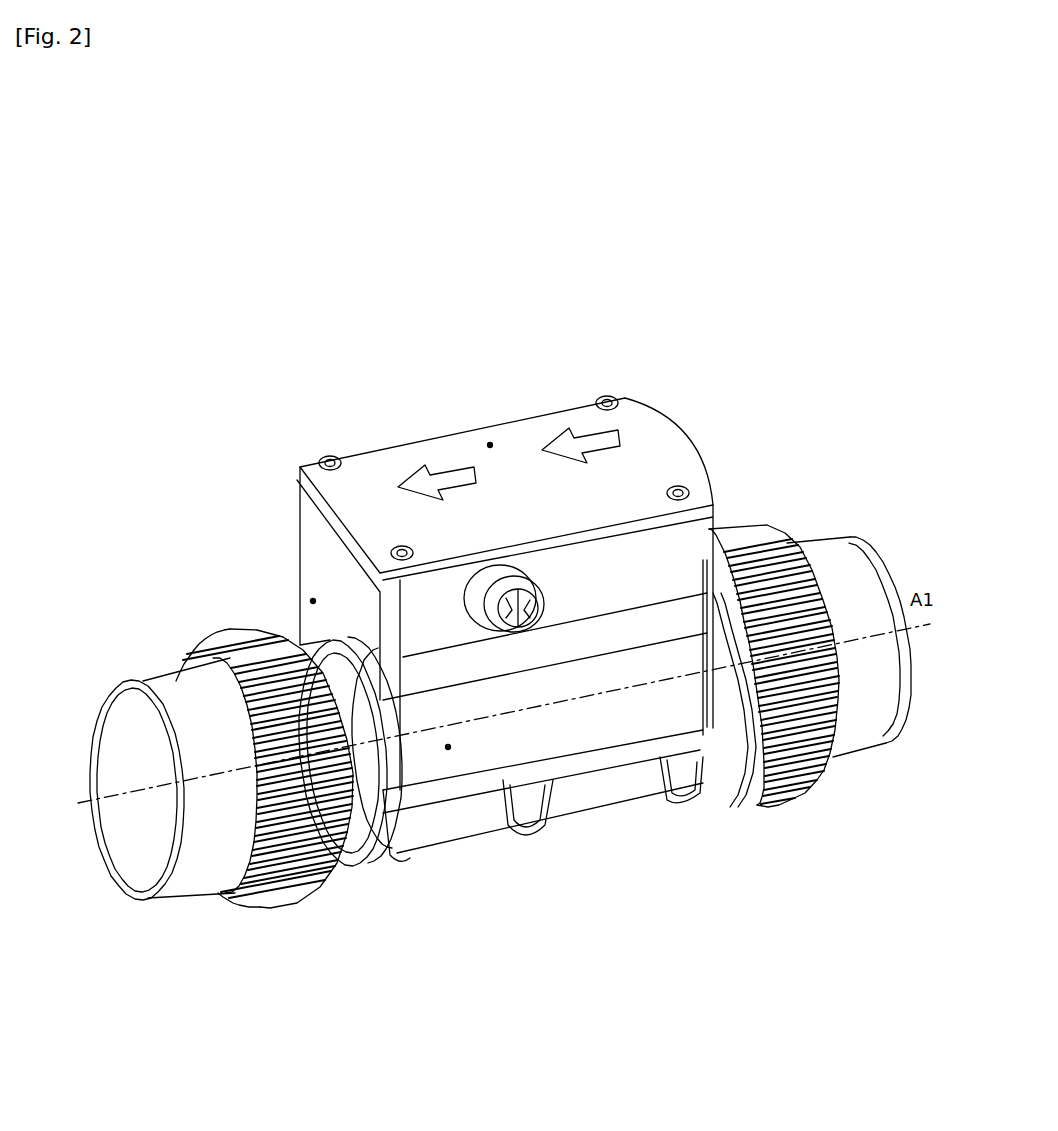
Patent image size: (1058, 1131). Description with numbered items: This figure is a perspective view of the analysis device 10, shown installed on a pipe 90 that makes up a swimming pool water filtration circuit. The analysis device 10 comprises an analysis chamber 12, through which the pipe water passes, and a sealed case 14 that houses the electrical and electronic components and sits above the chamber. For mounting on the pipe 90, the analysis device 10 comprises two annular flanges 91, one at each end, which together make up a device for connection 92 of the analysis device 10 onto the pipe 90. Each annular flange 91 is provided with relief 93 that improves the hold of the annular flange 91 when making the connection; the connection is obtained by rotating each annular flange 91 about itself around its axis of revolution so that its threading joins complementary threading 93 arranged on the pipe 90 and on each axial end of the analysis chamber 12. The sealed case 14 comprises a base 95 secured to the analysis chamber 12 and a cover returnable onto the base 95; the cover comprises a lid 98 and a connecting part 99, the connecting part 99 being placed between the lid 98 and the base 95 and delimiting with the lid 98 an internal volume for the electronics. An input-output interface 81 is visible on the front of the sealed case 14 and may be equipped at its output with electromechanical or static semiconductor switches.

The analysis device 10 is at (598, 283).
The analysis chamber 12 is at (577, 813).
The sealed case 14 is at (293, 533).
The input-output interface 81 is at (547, 597).
The pipe 90 is at (152, 678).
The annular flange 91 is at (282, 907).
The device for connection 92 is at (388, 960).
The relief 93 is at (257, 628).
The base 95 is at (448, 747).
The lid 98 is at (490, 445).
The connecting part 99 is at (313, 601).